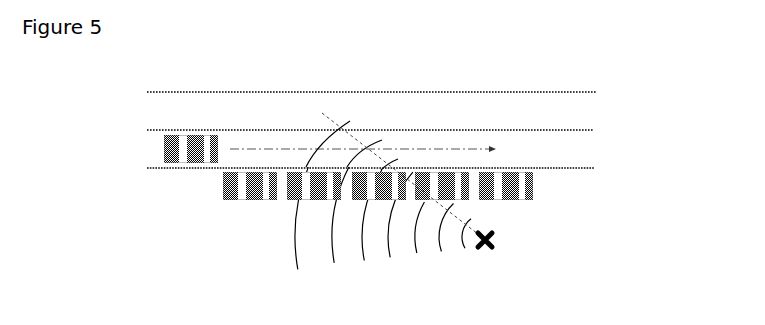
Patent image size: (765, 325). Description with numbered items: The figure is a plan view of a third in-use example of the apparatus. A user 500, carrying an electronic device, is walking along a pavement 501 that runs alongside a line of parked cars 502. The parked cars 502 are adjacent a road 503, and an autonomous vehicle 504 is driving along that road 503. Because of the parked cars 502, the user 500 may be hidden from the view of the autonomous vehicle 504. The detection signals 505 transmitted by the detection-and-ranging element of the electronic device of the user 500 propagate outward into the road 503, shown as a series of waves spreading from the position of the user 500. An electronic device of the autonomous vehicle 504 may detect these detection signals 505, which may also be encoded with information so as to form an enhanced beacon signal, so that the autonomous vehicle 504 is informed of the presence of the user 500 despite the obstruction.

The user 500 is at (495, 240).
The pavement 501 is at (540, 218).
The parked cars 502 is at (533, 190).
The road 503 is at (205, 102).
The autonomous vehicle 504 is at (168, 142).
The detection signals 505 is at (362, 148).